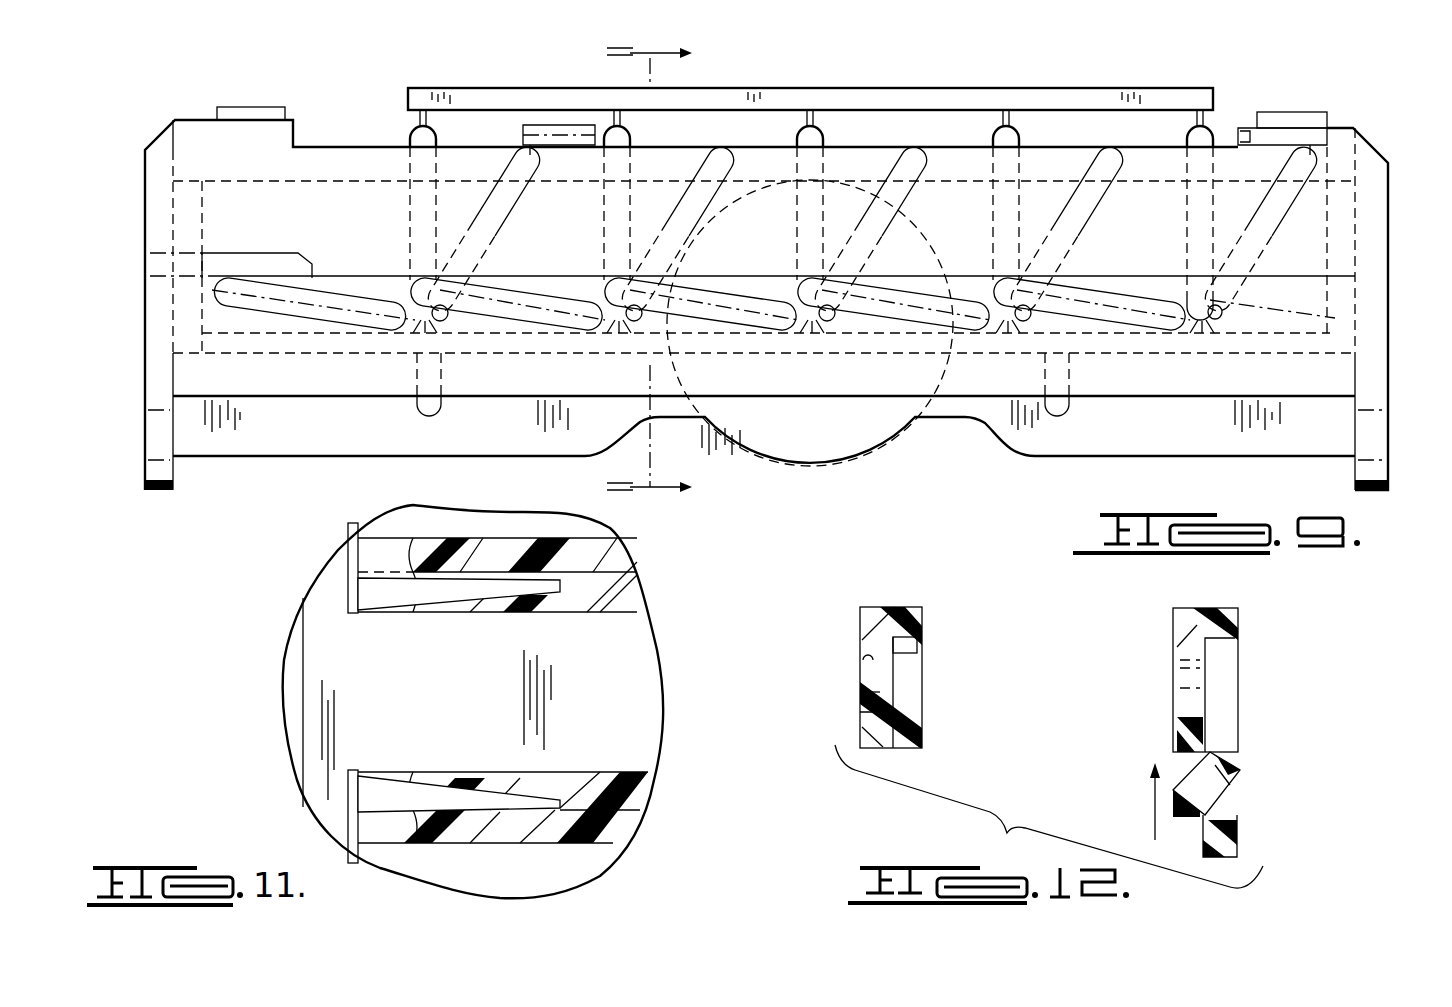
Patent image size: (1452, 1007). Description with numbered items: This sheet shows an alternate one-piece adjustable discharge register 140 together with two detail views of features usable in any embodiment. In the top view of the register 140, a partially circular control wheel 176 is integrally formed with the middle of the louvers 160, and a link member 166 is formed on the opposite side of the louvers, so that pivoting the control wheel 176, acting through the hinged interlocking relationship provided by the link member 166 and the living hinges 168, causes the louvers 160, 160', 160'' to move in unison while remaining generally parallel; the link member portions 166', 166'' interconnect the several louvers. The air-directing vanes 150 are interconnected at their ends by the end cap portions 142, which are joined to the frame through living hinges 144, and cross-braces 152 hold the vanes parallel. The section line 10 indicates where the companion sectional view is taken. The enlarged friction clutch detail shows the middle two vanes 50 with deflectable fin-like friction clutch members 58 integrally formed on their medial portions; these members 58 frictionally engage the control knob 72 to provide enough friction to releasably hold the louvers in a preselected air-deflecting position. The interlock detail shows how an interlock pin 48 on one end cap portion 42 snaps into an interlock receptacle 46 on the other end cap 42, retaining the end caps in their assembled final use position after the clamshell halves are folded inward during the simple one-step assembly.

In FIG. 9, the one-piece adjustable discharge register 140 is at (178, 106).
In FIG. 9, the end cap portion 142 is at (140, 240).
In FIG. 9, the living hinge 144 is at (255, 107).
In FIG. 9, the air-directing vane 150 is at (280, 383).
In FIG. 9, the cross-brace 152 is at (1065, 410).
In FIG. 9, the louver 160 is at (810, 201).
In FIG. 9, the louver 160' is at (872, 233).
In FIG. 9, the louver 160'' is at (773, 281).
In FIG. 9, the link member 166 is at (810, 77).
In FIG. 9, the link member 166' is at (553, 102).
In FIG. 9, the link member 166'' is at (266, 236).
In FIG. 9, the living hinge 168 is at (420, 118).
In FIG. 9, the control wheel 176 is at (880, 450).
In FIG. 9, the section line 10- 10 is at (671, 271).
In FIG. 12, the end cap portion 42 is at (905, 612).
In FIG. 12, the interlock receptacle 46 is at (868, 655).
In FIG. 12, the interlock pin 48 is at (862, 692).
In FIG. 11, the air-directing vane 50 is at (580, 600).
In FIG. 11, the friction clutch member 58 is at (392, 612).
In FIG. 11, the control knob 72 is at (650, 712).